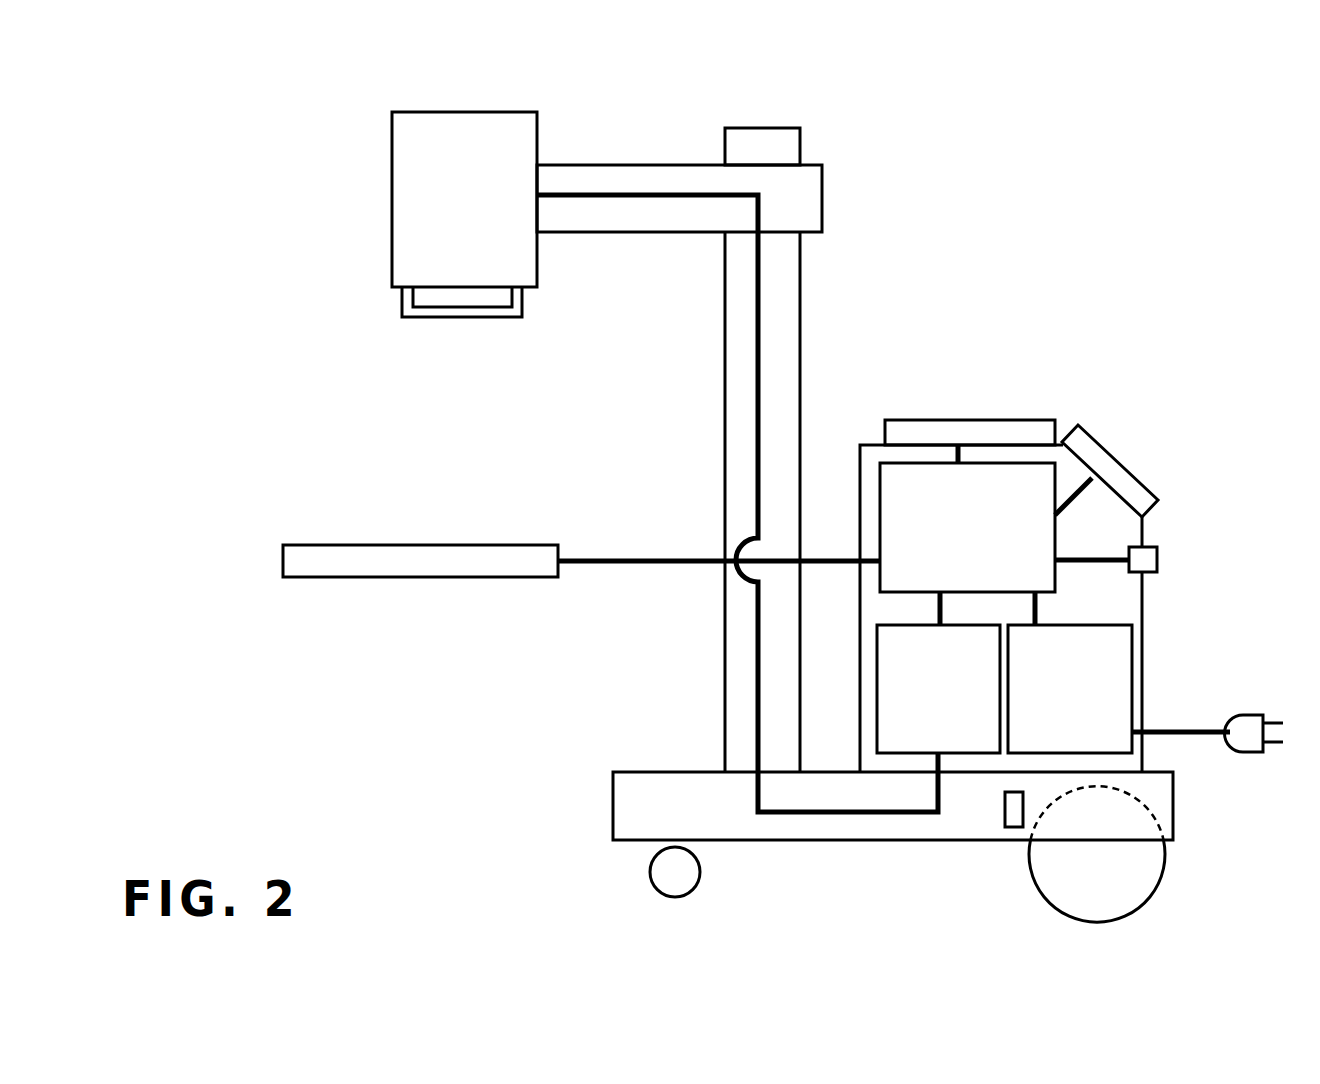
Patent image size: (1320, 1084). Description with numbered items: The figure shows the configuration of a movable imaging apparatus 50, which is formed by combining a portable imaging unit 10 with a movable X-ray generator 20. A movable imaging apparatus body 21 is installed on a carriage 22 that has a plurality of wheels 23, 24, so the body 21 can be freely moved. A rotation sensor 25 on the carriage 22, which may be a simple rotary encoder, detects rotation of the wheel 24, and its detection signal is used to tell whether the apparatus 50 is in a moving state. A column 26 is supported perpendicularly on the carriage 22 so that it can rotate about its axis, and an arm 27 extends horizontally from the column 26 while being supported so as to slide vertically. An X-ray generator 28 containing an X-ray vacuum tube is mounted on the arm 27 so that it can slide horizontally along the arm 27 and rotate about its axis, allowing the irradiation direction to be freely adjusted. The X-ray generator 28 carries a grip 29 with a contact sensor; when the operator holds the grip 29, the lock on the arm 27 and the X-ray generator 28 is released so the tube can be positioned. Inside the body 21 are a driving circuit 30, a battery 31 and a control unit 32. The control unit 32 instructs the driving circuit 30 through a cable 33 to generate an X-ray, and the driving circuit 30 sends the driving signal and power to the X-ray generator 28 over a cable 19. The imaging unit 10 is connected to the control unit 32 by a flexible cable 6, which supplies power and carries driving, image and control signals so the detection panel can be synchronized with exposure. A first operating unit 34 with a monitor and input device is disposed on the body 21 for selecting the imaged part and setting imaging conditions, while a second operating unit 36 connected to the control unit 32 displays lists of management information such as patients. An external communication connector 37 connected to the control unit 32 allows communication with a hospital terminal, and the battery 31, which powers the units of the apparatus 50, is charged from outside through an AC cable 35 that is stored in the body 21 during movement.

The cable 6 is at (640, 566).
The imaging unit 10 is at (505, 548).
The cable 19 is at (755, 315).
The movable X-ray generator 20 is at (618, 451).
The movable imaging apparatus body 21 is at (857, 710).
The carriage 22 is at (887, 845).
The wheel 23 is at (660, 872).
The wheel 24 is at (1123, 863).
The rotation sensor 25 is at (1013, 827).
The column 26 is at (800, 277).
The arm 27 is at (640, 163).
The X-ray generator 28 is at (449, 110).
The grip 29 is at (400, 305).
The driving circuit 30 is at (970, 757).
The battery 31 is at (1143, 665).
The control unit 32 is at (933, 462).
The cable 33 is at (936, 615).
The first operating unit 34 is at (1000, 422).
The AC cable 35 is at (1200, 736).
The second operating unit 36 is at (1140, 473).
The external communication connector 37 is at (1160, 556).
The movable imaging apparatus 50 is at (460, 382).